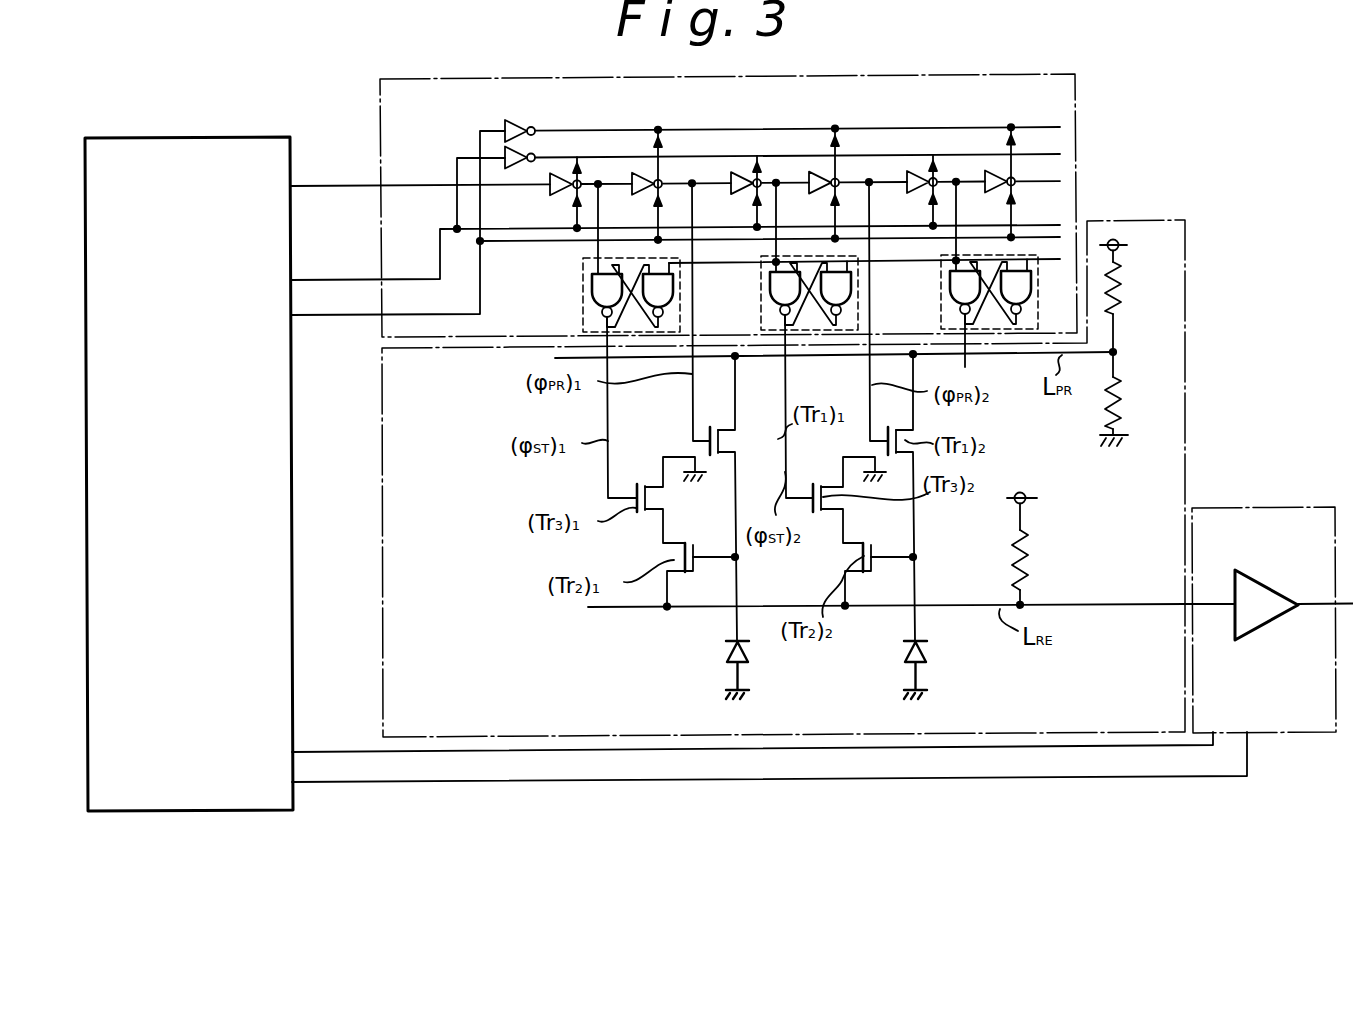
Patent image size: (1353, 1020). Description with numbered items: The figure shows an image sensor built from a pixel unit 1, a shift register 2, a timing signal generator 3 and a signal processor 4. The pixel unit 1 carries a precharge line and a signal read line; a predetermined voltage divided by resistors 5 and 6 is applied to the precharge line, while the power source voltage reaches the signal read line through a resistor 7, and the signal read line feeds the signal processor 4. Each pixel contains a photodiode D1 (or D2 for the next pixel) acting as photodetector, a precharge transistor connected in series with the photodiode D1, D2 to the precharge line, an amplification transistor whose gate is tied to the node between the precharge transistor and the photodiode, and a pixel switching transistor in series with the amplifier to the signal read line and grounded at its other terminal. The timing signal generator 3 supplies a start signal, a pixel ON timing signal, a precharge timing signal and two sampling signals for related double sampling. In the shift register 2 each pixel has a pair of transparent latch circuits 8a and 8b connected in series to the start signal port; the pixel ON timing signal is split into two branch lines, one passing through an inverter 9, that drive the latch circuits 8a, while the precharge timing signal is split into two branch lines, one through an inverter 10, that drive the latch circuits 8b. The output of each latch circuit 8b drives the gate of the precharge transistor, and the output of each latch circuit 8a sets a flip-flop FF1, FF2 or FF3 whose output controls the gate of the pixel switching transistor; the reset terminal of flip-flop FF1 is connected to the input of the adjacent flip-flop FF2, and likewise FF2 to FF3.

The pixel unit 1 is at (382, 503).
The shift register 2 is at (1077, 92).
The timing signal generator 3 is at (291, 413).
The signal processor 4 is at (1256, 508).
The resistor 5 is at (1120, 289).
The resistor 6 is at (1122, 386).
The resistor 7 is at (1030, 560).
The transparent latch circuit 8a is at (551, 189).
The transparent latch circuit 8b is at (636, 190).
The inverter 9 is at (506, 153).
The inverter 10 is at (506, 126).
The flip-flop FF1 is at (583, 292).
The flip-flop FF2 is at (761, 281).
The flip-flop FF3 is at (941, 281).
The photodiode D1 is at (750, 648).
The photodiode D2 is at (928, 648).